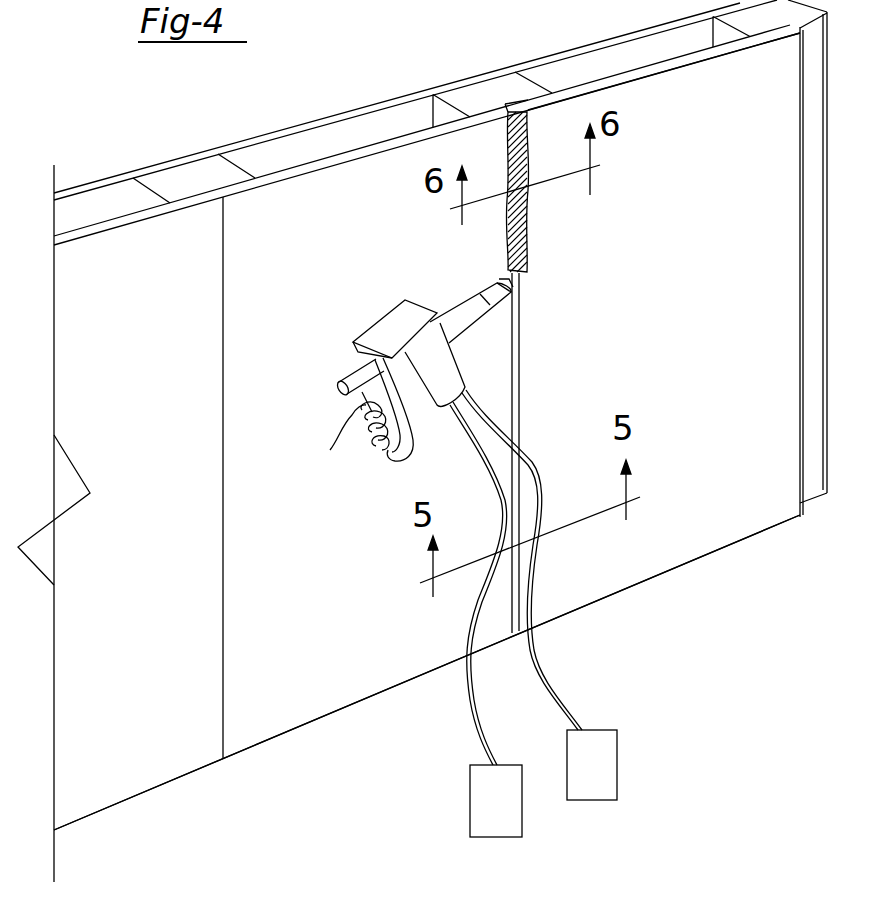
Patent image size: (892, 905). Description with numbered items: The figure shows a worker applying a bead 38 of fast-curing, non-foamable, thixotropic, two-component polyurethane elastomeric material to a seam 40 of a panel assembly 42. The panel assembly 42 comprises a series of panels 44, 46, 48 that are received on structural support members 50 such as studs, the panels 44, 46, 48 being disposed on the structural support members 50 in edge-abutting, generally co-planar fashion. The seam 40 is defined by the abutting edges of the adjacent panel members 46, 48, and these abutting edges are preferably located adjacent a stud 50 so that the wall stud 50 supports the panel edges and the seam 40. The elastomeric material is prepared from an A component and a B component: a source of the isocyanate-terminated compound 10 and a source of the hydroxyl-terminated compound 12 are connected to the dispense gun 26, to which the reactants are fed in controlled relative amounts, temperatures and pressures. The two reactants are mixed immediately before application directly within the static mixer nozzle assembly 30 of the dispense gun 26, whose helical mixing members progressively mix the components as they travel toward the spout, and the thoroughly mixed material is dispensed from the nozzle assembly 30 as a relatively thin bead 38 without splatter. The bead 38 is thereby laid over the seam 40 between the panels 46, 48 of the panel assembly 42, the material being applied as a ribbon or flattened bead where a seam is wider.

The source of the isocyanate-terminated compound 10 is at (470, 797).
The source of the hydroxyl-terminated compound 12 is at (617, 767).
The dispense gun 26 is at (415, 297).
The static mixer nozzle assembly 30 is at (470, 327).
The bead 38 is at (523, 262).
The seam 40 is at (519, 313).
The panel assembly 42 is at (645, 598).
The panel 44 is at (192, 338).
The panel 46 is at (318, 338).
The panel 48 is at (712, 271).
The structural support member 50 is at (813, 452).